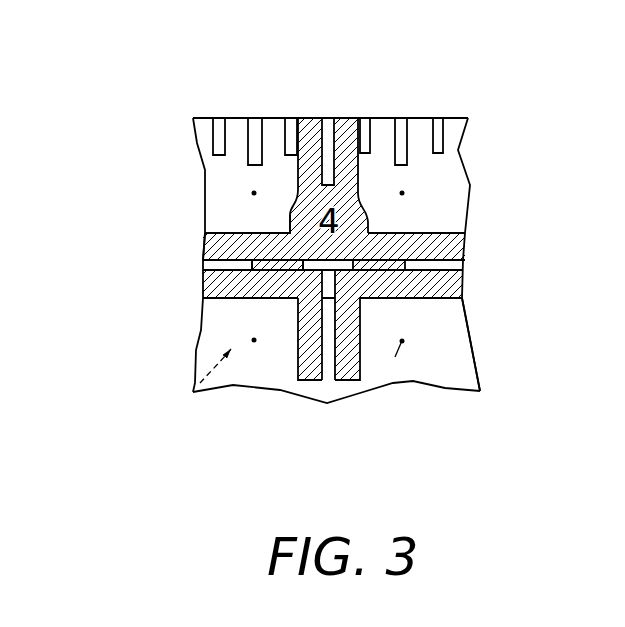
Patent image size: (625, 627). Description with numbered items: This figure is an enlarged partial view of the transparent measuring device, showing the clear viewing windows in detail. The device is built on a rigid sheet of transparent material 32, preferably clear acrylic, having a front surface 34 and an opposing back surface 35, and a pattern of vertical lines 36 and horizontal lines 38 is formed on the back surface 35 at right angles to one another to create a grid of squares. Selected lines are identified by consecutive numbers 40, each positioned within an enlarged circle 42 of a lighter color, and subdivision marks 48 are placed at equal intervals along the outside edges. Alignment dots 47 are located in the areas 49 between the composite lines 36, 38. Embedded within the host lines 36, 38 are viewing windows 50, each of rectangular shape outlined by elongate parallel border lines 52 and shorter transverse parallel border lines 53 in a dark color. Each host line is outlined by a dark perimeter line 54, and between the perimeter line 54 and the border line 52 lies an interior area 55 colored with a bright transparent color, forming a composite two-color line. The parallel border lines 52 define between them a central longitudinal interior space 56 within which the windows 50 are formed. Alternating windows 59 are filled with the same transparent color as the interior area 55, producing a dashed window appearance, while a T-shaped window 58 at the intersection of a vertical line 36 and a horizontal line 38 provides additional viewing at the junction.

The rigid sheet of transparent material 32 is at (436, 388).
The front surface 34 is at (442, 327).
The back surface 35 is at (195, 389).
The vertical lines 36 is at (351, 383).
The horizontal lines 38 is at (192, 245).
The numbers 40 is at (300, 210).
The enlarged circle 42 is at (283, 213).
The alignment dots 47 is at (393, 356).
The subdivision marks 48 is at (280, 121).
The areas 49 is at (414, 357).
The viewing windows 50 is at (326, 125).
The elongate parallel border lines 52 is at (313, 363).
The transverse parallel border lines 53 is at (245, 278).
The perimeter line 54 is at (262, 300).
The interior area 55 is at (215, 240).
The central longitudinal interior space 56 is at (192, 265).
The T-shaped window 58 is at (330, 268).
The alternating windows 59 is at (267, 262).